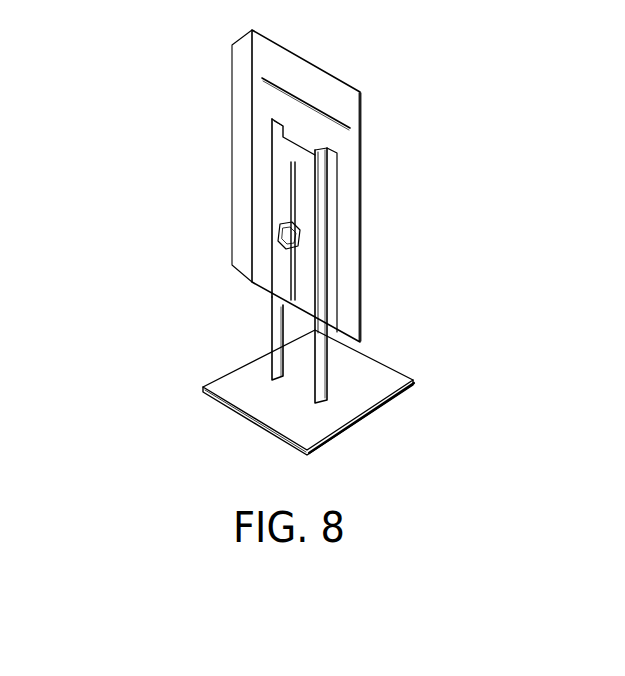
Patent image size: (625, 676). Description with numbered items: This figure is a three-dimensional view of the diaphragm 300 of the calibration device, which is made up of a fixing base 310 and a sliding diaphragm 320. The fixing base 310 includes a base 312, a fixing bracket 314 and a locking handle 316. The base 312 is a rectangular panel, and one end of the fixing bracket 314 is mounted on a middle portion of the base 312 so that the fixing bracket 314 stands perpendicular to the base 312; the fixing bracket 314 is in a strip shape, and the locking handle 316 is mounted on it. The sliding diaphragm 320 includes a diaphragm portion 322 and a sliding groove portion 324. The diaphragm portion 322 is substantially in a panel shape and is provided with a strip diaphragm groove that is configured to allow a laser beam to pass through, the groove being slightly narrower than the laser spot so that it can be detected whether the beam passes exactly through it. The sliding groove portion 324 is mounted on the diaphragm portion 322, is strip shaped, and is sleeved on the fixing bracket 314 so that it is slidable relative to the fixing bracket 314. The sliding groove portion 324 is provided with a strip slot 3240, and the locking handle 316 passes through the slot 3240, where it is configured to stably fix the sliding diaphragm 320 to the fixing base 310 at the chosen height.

The diaphragm 300 is at (398, 104).
The fixing base 310 is at (129, 190).
The base 312 is at (213, 385).
The fixing bracket 314 is at (275, 320).
The locking handle 316 is at (283, 232).
The sliding diaphragm 320 is at (134, 22).
The diaphragm portion 322 is at (233, 44).
The sliding groove portion 324 is at (280, 183).
The slot 3240 is at (292, 197).